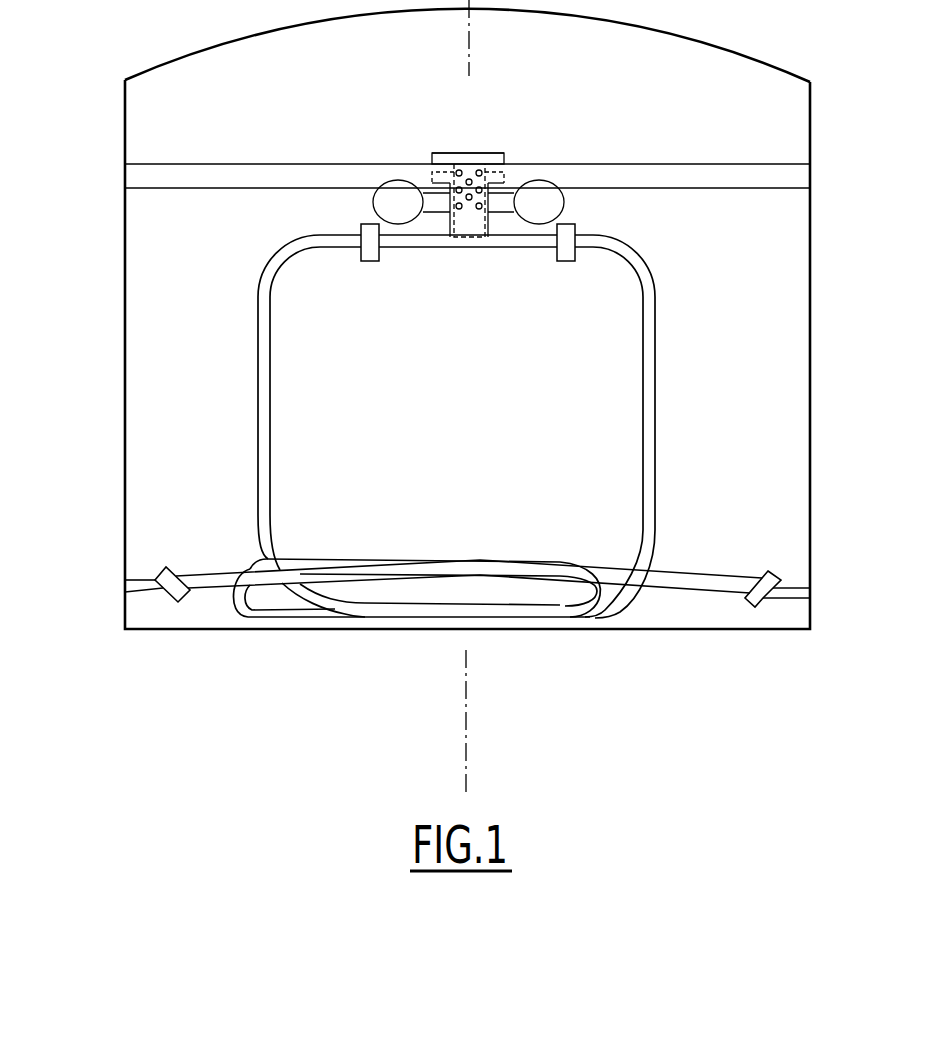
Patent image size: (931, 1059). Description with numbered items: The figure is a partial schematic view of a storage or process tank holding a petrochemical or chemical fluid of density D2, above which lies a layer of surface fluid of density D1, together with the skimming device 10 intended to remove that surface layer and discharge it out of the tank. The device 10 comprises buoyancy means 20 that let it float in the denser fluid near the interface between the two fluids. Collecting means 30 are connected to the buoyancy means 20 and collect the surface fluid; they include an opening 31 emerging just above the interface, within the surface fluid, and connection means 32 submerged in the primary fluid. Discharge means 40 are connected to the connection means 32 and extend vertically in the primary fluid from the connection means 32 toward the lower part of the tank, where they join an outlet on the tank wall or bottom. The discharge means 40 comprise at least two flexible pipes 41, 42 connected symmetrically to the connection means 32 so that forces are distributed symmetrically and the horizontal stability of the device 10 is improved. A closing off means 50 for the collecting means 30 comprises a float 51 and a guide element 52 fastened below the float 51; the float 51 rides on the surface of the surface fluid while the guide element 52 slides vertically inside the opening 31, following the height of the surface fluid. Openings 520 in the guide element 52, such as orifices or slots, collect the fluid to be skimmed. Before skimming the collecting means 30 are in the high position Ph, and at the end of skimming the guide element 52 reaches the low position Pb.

The skimming device 10 is at (505, 164).
The buoyancy means 20 is at (563, 212).
The collecting means 30 is at (428, 247).
The opening 31 is at (497, 197).
The connection means 32 is at (373, 263).
The discharge means 40 is at (395, 426).
The flexible pipe 41 is at (258, 363).
The flexible pipe 42 is at (655, 402).
The closing off means 50 is at (439, 164).
The float 51 is at (479, 114).
The guide element 52 is at (428, 202).
The openings 520 is at (470, 210).
The low position Pb is at (452, 148).
The high position Ph is at (490, 153).
The density of surface fluid D1 is at (467, 179).
The density of primary fluid D2 is at (467, 206).